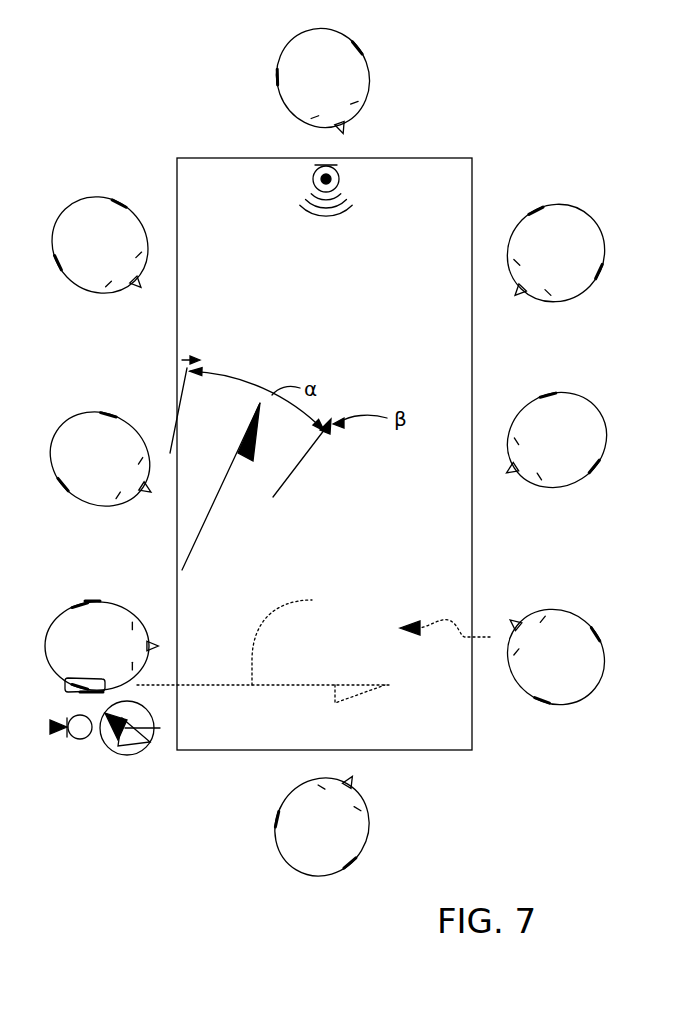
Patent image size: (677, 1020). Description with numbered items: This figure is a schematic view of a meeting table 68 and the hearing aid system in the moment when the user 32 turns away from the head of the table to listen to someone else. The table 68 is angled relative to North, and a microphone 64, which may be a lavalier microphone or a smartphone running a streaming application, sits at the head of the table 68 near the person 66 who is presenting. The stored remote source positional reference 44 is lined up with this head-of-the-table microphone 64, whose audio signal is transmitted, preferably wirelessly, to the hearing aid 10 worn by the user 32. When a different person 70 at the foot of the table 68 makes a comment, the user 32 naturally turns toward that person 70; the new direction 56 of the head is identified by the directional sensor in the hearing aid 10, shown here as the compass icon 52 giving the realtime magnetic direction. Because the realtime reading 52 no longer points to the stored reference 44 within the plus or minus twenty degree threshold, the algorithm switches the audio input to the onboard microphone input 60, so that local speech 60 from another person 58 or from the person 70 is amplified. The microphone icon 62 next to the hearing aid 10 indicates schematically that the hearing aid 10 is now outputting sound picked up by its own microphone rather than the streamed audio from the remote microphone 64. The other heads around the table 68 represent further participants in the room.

The hearing aid 10 is at (75, 688).
The user 32 is at (60, 638).
The remote source positional reference 44 is at (224, 479).
The compass icon 52 is at (125, 750).
The new direction 56 is at (298, 636).
The other person 58 is at (362, 832).
The speech 60 is at (443, 620).
The microphone icon 62 is at (78, 736).
The microphone 64 is at (340, 178).
The person 66 is at (348, 66).
The table 68 is at (242, 188).
The different person 70 is at (568, 636).